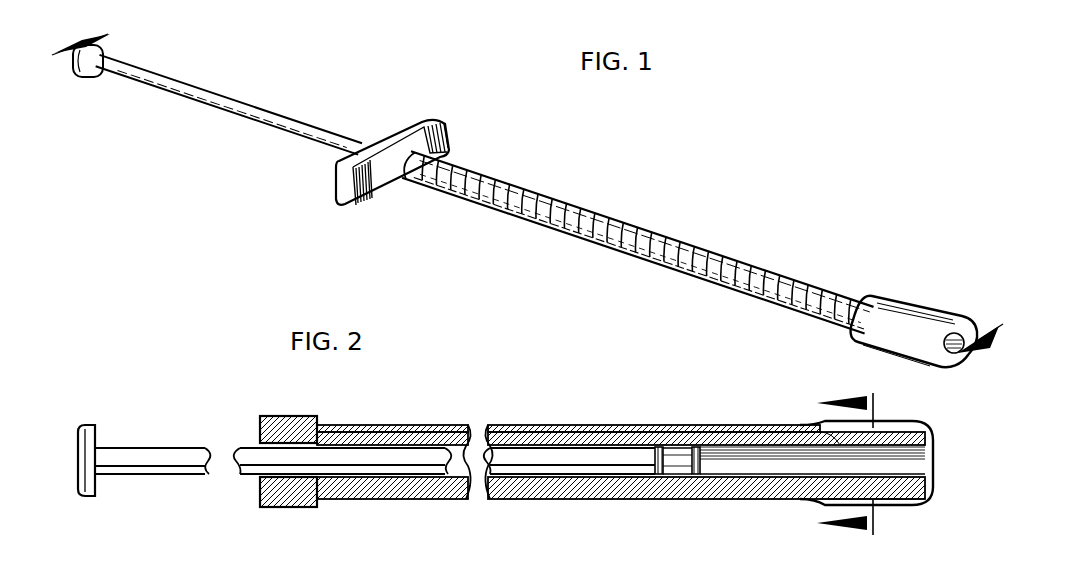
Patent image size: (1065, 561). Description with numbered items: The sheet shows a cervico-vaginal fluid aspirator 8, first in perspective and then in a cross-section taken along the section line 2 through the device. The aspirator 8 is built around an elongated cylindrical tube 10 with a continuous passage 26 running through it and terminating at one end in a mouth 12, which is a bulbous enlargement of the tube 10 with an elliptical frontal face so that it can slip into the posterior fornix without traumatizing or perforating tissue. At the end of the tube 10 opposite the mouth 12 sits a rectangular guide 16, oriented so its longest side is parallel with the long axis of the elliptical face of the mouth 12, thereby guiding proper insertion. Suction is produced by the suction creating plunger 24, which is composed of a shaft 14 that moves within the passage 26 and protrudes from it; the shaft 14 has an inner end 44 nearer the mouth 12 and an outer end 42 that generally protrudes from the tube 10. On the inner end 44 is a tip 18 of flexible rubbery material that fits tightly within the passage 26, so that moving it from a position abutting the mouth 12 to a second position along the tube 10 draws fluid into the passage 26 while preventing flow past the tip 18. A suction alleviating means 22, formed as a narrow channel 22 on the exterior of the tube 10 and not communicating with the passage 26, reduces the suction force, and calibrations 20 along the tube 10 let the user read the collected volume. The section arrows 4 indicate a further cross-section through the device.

In FIG. 1, the section line 2— 2 is at (527, 183).
In FIG. 2, the section line 4- 4 is at (832, 465).
In FIG. 1, the cervico-vaginal fluid aspirator 8 is at (590, 170).
In FIG. 2, the cervico-vaginal fluid aspirator 8 is at (493, 405).
In FIG. 2, the elongated cylindrical tube 10 is at (517, 499).
In FIG. 1, the mouth 12 is at (903, 322).
In FIG. 2, the mouth 12 is at (903, 504).
In FIG. 1, the shaft 14 is at (259, 113).
In FIG. 2, the shaft 14 is at (386, 460).
In FIG. 1, the guide 16 is at (398, 125).
In FIG. 2, the guide 16 is at (284, 416).
In FIG. 2, the tip 18 is at (670, 456).
In FIG. 1, the calibrations 20 is at (670, 235).
In FIG. 1, the suction alleviating means (channel) 22 is at (803, 282).
In FIG. 2, the suction alleviating means (channel) 22 is at (742, 430).
In FIG. 2, the suction creating plunger 24 is at (157, 428).
In FIG. 1, the continuous passage 26 is at (951, 352).
In FIG. 2, the continuous passage 26 is at (914, 467).
In FIG. 2, the outer end 42 is at (165, 480).
In FIG. 2, the inner end 44 is at (672, 479).